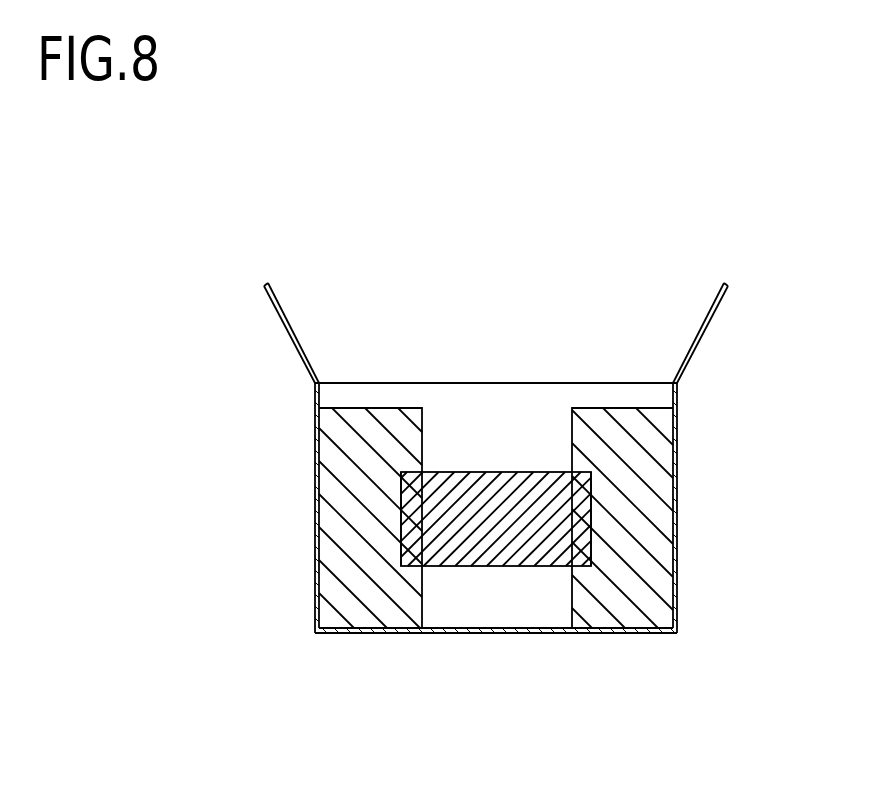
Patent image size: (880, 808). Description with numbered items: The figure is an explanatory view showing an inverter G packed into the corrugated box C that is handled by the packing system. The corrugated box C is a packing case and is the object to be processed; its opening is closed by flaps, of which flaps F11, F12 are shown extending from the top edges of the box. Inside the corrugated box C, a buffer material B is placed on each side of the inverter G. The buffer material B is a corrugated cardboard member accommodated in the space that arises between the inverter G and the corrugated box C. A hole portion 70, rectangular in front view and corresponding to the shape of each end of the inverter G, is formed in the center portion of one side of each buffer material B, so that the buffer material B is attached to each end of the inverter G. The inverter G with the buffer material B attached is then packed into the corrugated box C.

The corrugated box C is at (677, 492).
The flap F11 is at (290, 327).
The flap F12 is at (703, 327).
The buffer material B is at (353, 551).
The inverter G is at (471, 550).
The hole portion 70 is at (402, 513).